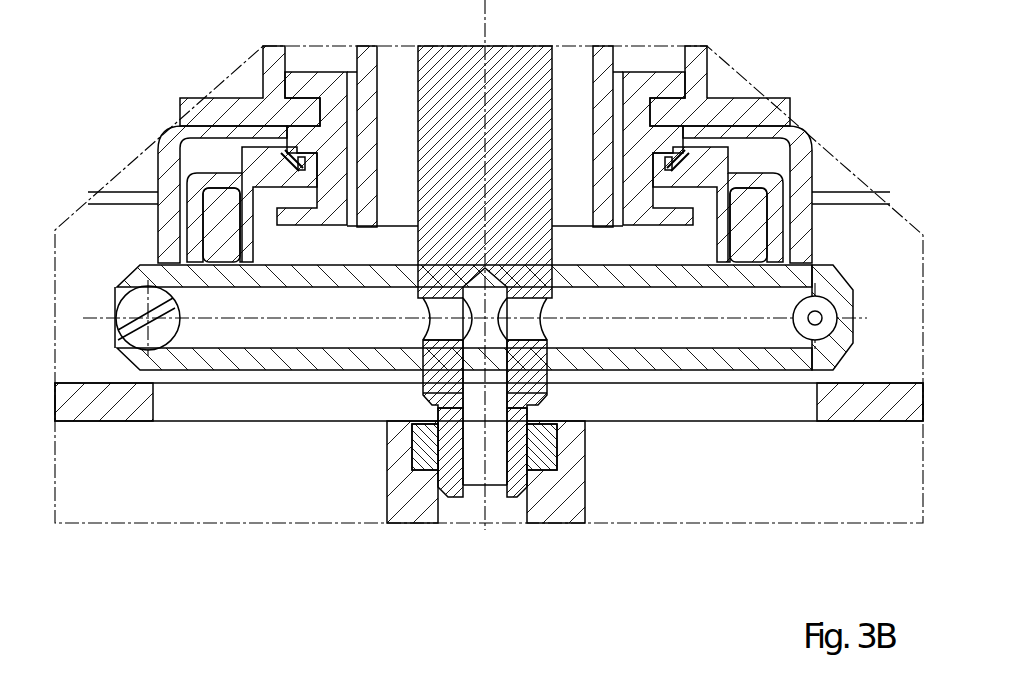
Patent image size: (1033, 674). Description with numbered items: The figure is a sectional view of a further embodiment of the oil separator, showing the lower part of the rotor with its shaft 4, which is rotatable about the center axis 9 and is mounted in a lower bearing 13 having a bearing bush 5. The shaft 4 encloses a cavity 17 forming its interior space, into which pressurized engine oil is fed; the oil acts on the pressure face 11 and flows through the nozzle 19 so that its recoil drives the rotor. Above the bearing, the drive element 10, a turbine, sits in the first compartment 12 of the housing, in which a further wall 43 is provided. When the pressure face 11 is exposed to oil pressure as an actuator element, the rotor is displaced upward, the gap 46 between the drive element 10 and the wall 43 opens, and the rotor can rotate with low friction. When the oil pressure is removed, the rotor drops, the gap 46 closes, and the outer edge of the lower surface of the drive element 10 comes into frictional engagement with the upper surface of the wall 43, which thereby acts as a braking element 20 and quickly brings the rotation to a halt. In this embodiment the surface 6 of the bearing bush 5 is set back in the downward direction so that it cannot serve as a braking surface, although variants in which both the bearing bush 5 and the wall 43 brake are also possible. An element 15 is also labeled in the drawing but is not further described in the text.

The center axis 9 is at (470, 30).
The shaft 4 is at (434, 188).
The nozzle 19 is at (800, 303).
The first compartment 12 is at (275, 410).
The coupling block 15 is at (417, 403).
The drive element 10 is at (207, 367).
The bearing bush 5 is at (400, 456).
The cavity 17 is at (477, 463).
The lower bearing 13 is at (548, 463).
The pressure face 11 is at (475, 273).
The surface of the bearing bush 6 is at (530, 423).
The gap 46 is at (807, 373).
The braking element 20 is at (856, 383).
The wall 43 is at (860, 397).